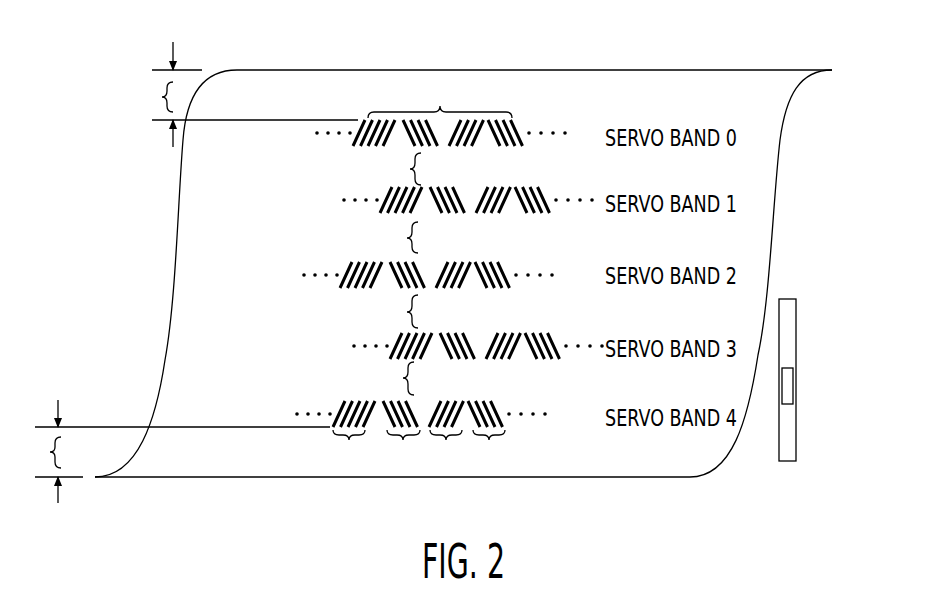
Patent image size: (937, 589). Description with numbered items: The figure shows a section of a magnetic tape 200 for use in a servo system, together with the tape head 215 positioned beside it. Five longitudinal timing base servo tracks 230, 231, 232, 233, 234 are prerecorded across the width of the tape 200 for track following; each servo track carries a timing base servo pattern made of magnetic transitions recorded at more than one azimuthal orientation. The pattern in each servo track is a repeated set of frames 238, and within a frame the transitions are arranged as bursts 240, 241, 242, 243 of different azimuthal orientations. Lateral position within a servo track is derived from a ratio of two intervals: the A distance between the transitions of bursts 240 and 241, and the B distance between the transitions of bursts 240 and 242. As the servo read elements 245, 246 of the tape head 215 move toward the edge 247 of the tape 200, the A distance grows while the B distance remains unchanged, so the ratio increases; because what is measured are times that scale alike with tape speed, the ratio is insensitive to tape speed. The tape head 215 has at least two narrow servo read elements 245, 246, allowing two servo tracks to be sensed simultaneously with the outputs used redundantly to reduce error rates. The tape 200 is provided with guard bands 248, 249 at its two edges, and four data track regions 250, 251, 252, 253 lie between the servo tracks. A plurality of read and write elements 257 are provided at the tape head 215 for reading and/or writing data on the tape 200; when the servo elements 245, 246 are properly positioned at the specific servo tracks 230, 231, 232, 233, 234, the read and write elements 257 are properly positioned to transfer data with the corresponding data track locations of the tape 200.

The magnetic tape 200 is at (463, 275).
The tape head 215 is at (825, 375).
The servo track 230 is at (412, 115).
The servo track 231 is at (367, 216).
The servo track 232 is at (337, 288).
The servo track 233 is at (388, 358).
The servo track 234 is at (393, 436).
The frame 238 is at (440, 96).
The burst 240 is at (354, 436).
The burst 241 is at (403, 436).
The burst 242 is at (448, 436).
The burst 243 is at (489, 436).
The servo read element 245 is at (788, 418).
The servo read element 246 is at (788, 352).
The edge of the tape 247 is at (552, 478).
The guard band 248 is at (242, 94).
The guard band 249 is at (170, 451).
The data track region 250 is at (402, 182).
The data track region 251 is at (405, 250).
The data track region 252 is at (405, 326).
The data track region 253 is at (397, 392).
The read and write elements 257 is at (794, 387).